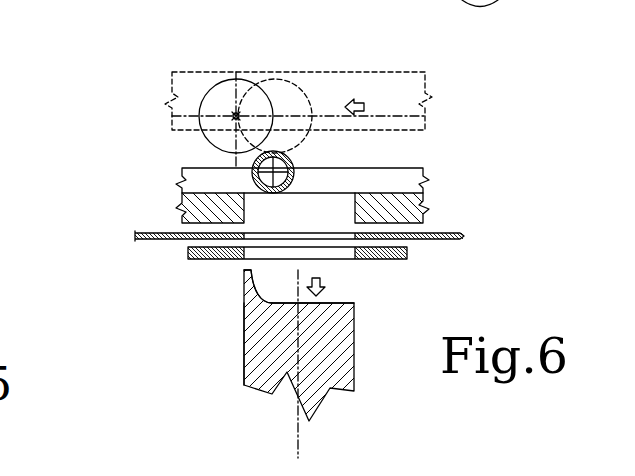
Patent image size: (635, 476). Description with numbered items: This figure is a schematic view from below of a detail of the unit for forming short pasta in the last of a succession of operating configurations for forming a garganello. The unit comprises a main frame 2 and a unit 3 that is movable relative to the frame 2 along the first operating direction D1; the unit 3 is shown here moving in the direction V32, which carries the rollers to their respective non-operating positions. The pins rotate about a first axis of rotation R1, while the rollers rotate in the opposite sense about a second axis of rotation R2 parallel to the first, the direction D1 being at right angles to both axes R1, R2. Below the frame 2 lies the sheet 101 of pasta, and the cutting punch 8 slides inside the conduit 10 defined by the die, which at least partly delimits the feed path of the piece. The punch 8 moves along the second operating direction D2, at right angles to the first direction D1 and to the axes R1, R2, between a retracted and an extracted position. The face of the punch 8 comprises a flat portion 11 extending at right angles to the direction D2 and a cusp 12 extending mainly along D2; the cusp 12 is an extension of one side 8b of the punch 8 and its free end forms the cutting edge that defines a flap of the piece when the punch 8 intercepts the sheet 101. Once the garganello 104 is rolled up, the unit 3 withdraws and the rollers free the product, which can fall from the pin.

The main frame 2 is at (422, 178).
The movable unit 3 is at (412, 70).
The cutting punch 8 is at (259, 383).
The side of the punch 8b is at (243, 362).
The conduit 10 is at (338, 216).
The flat portion 11 is at (327, 303).
The cusp 12 is at (244, 283).
The sheet of pasta 101 is at (443, 242).
The rolled up piece (garganello) 104 is at (254, 181).
The first axis of rotation R1 is at (297, 86).
The second axis of rotation R2 is at (236, 112).
The direction of movement of unit 3 V32 is at (353, 104).
The first operating direction D1 is at (395, 116).
The second operating direction D2 is at (299, 438).